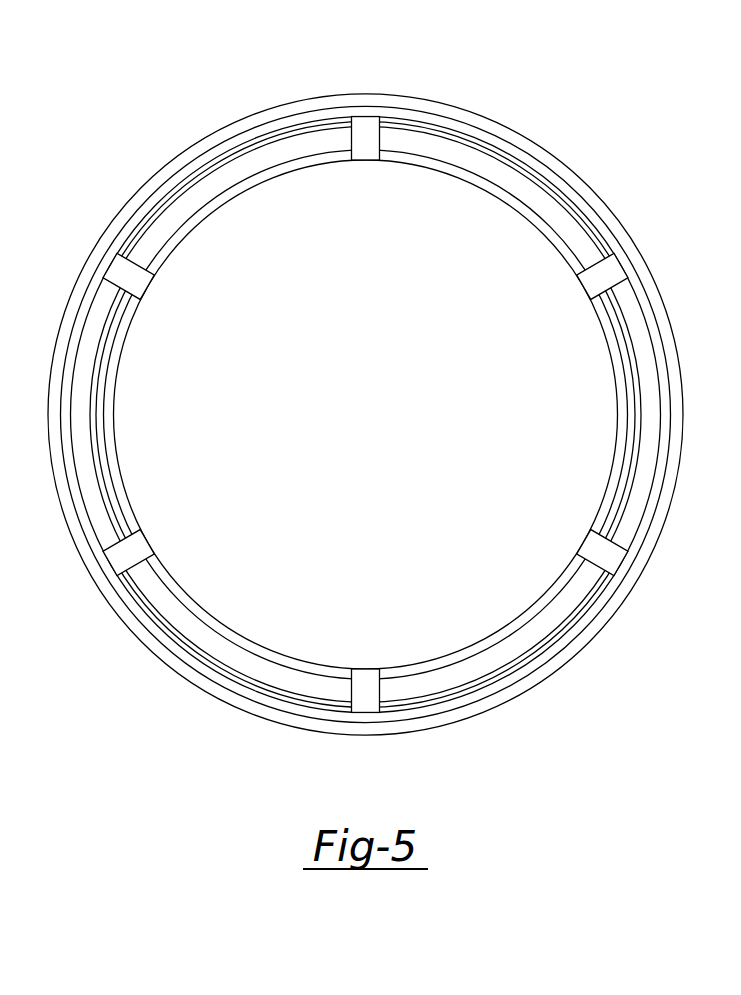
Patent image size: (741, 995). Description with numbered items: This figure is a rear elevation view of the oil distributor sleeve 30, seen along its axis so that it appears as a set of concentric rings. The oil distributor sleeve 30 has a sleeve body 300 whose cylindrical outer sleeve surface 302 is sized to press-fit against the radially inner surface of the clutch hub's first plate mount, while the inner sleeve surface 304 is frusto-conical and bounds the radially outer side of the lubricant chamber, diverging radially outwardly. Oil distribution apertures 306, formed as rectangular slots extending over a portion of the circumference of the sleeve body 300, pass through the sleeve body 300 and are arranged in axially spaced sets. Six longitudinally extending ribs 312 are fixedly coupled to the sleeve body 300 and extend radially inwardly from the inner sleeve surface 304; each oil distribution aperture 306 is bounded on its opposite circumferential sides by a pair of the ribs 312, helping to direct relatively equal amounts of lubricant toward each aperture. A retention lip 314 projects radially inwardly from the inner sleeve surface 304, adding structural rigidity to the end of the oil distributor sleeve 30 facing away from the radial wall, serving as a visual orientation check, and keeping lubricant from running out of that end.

The oil distributor sleeve 30 is at (634, 105).
The sleeve body 300 is at (275, 717).
The outer sleeve surface 302 is at (462, 720).
The inner sleeve surface 304 is at (78, 378).
The oil distribution apertures 306 is at (180, 203).
The longitudinally extending ribs 312 is at (368, 163).
The retention lip 314 is at (235, 648).